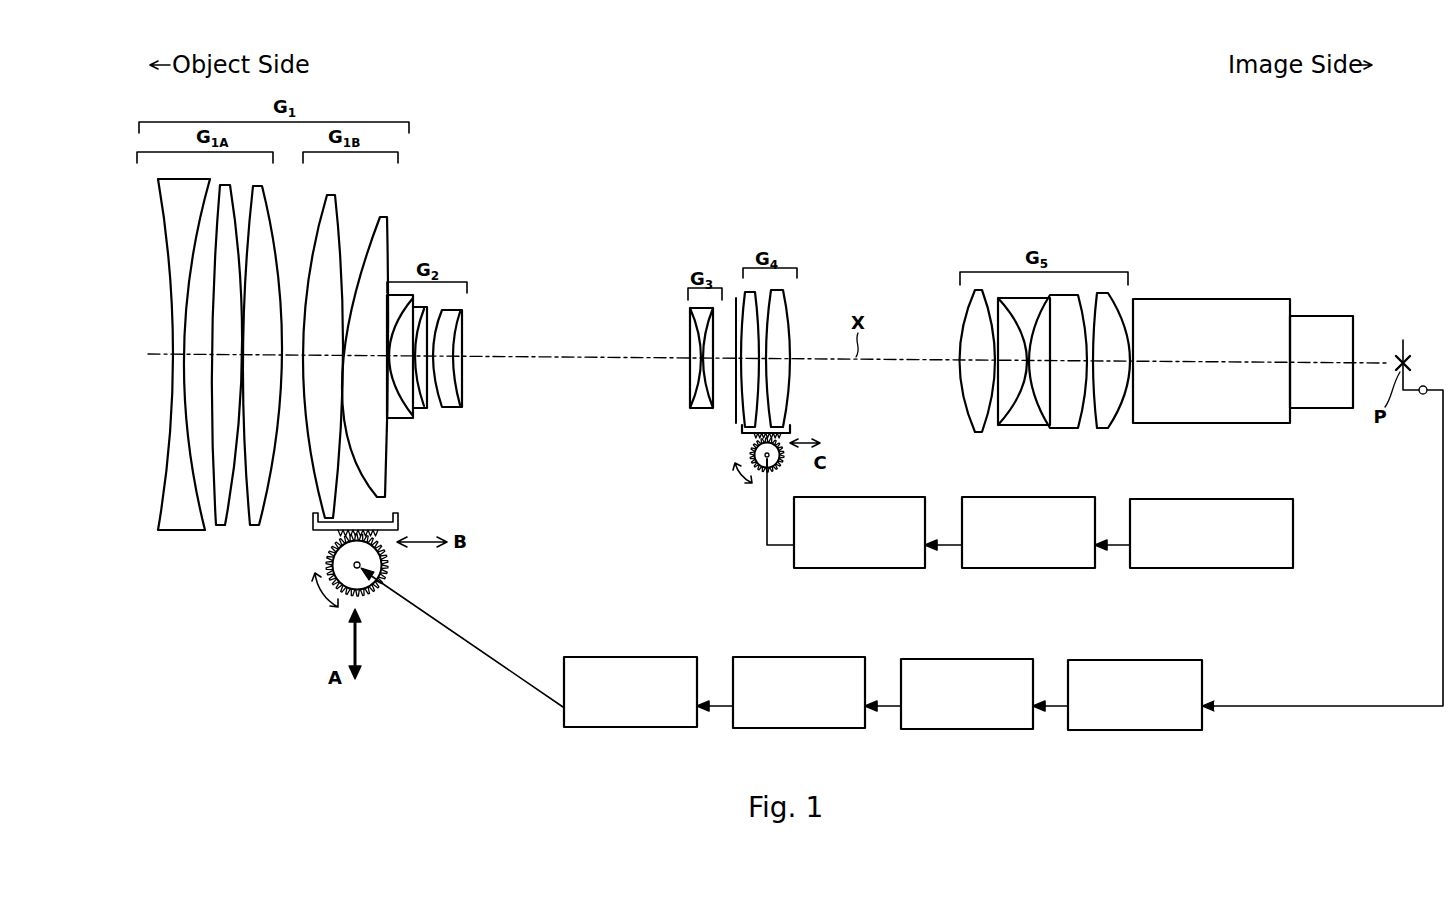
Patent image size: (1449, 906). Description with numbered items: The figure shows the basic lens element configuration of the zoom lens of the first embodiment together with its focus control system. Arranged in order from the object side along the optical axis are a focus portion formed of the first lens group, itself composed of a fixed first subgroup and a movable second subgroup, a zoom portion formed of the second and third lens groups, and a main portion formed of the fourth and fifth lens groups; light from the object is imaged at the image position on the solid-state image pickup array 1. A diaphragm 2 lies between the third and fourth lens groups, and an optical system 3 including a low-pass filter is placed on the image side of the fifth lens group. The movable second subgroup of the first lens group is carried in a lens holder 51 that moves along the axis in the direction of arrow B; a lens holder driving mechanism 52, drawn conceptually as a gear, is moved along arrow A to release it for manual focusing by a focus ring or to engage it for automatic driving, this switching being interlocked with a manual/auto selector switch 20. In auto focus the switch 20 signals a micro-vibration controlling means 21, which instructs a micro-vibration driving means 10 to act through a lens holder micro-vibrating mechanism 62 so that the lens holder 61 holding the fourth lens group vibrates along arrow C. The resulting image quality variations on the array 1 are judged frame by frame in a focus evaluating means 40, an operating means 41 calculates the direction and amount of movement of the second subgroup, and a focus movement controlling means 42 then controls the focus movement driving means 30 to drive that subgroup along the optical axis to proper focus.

The solid-state image pickup array 1 is at (1403, 340).
The diaphragm 2 is at (733, 412).
The optical system 3 is at (1201, 298).
The micro-vibration driving means 10 is at (854, 497).
The manual/auto selector switch 20 is at (1189, 499).
The micro-vibration controlling means 21 is at (1021, 497).
The focus movement driving means 30 is at (627, 657).
The focus evaluating means 40 is at (1132, 660).
The operating means 41 is at (964, 659).
The focus movement controlling means 42 is at (797, 657).
The lens holder 51 is at (399, 520).
The lens holder driving mechanism 52 is at (386, 565).
The lens holder 61 is at (797, 433).
The lens holder micro-vibrating mechanism 62 is at (750, 457).